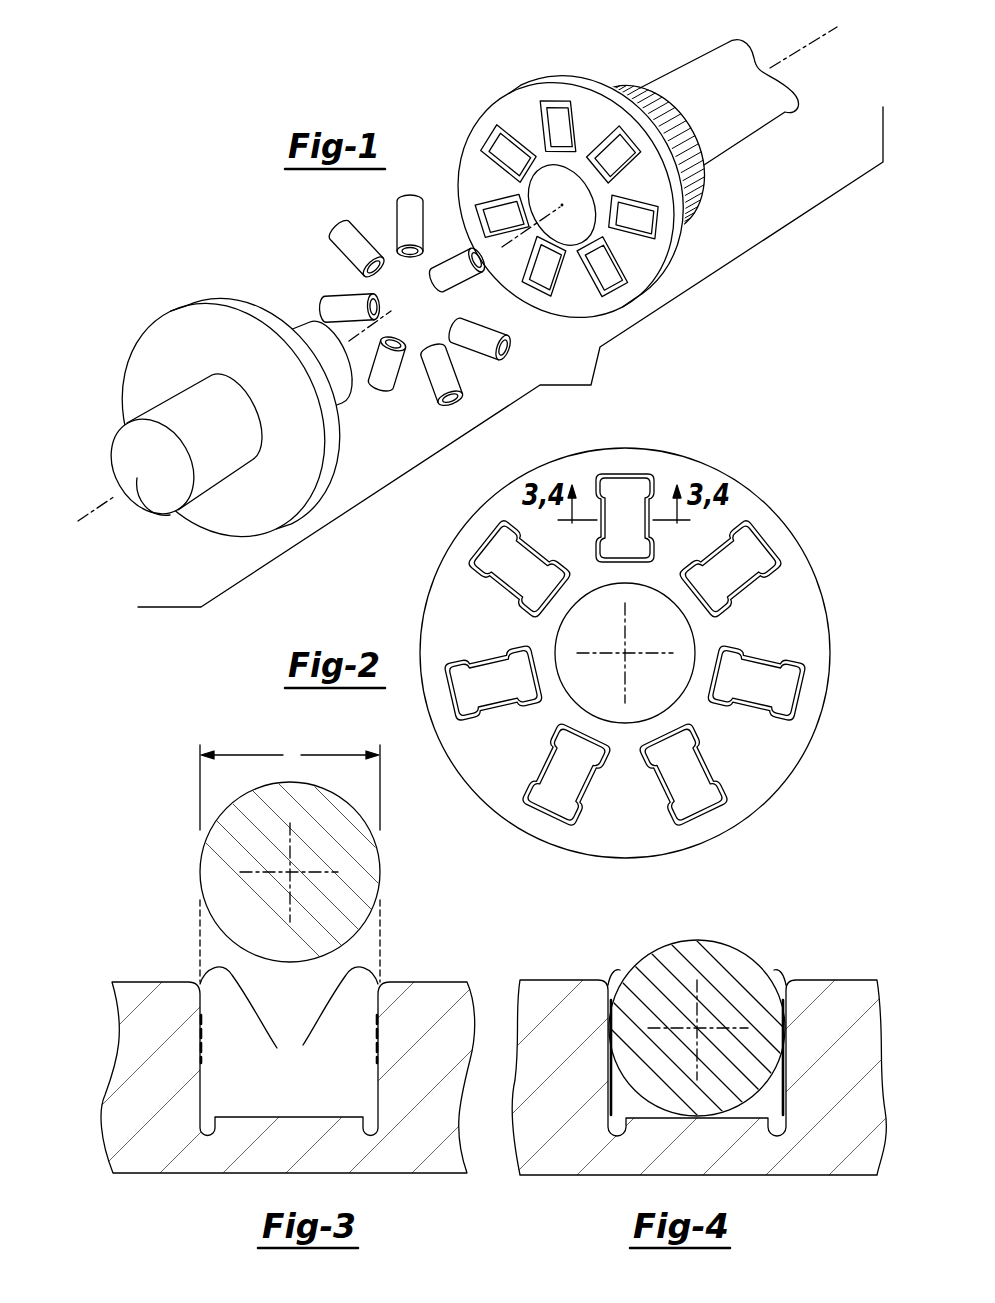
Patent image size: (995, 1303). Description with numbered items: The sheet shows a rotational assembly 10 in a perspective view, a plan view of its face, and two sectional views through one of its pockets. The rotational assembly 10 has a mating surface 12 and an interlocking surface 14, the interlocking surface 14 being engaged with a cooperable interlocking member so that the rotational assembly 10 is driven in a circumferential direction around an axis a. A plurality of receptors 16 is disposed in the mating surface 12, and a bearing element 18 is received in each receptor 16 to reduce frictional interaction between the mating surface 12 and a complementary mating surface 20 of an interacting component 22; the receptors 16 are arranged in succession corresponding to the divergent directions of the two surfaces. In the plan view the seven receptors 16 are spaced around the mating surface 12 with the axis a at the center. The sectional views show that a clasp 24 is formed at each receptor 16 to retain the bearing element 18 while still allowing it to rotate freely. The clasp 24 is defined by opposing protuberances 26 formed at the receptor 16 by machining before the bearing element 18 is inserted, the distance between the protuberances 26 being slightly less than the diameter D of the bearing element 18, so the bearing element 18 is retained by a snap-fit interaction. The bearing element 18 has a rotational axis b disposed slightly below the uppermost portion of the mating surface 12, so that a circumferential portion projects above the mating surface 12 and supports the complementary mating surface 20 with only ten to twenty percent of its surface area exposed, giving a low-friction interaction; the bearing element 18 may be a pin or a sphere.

In FIG. 1, the rotational assembly 10 is at (610, 70).
In FIG. 1, the mating surface 12 is at (645, 215).
In FIG. 2, the mating surface 12 is at (790, 605).
In FIG. 3, the mating surface 12 is at (440, 982).
In FIG. 4, the mating surface 12 is at (840, 980).
In FIG. 1, the interlocking surface 14 is at (703, 163).
In FIG. 1, the receptor 16 is at (482, 204).
In FIG. 2, the receptor 16 is at (482, 585).
In FIG. 3, the receptor 16 is at (222, 1088).
In FIG. 4, the receptor 16 is at (775, 1092).
In FIG. 1, the bearing element 18 is at (394, 343).
In FIG. 2, the bearing element 18 is at (631, 532).
In FIG. 3, the bearing element 18 is at (316, 957).
In FIG. 4, the bearing element 18 is at (700, 940).
In FIG. 1, the complementary mating surface 20 is at (276, 306).
In FIG. 1, the interacting component 22 is at (175, 322).
In FIG. 3, the clasp 24 is at (186, 942).
In FIG. 4, the clasp 24 is at (650, 930).
In FIG. 2, the protuberance 26 is at (748, 587).
In FIG. 3, the protuberance 26 is at (289, 1019).
In FIG. 4, the protuberance 26 is at (610, 967).
In FIG. 1, the axis a is at (464, 264).
In FIG. 2, the axis a is at (625, 653).
In FIG. 3, the rotational axis b is at (290, 872).
In FIG. 4, the rotational axis b is at (697, 1028).
In FIG. 3, the diameter D is at (290, 785).